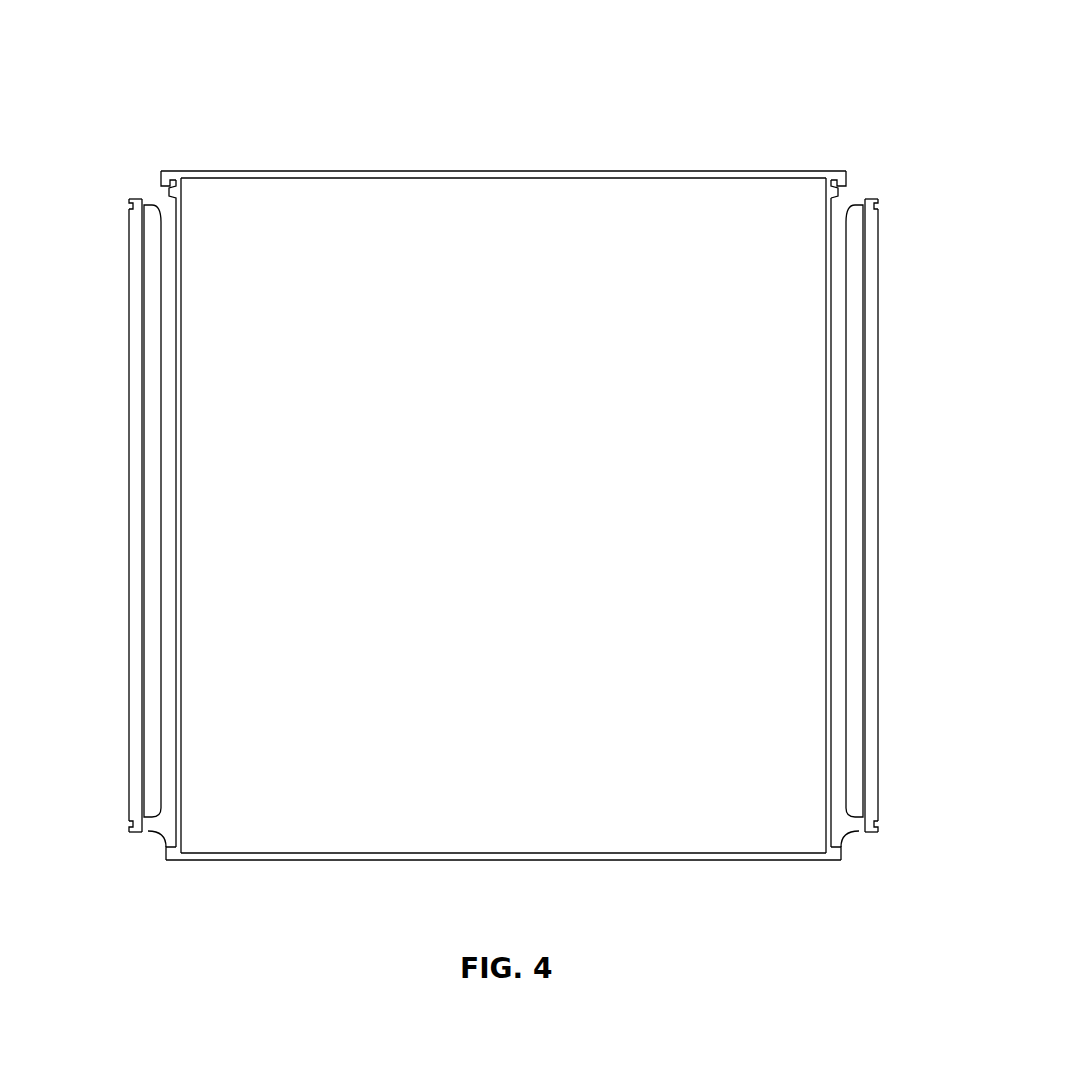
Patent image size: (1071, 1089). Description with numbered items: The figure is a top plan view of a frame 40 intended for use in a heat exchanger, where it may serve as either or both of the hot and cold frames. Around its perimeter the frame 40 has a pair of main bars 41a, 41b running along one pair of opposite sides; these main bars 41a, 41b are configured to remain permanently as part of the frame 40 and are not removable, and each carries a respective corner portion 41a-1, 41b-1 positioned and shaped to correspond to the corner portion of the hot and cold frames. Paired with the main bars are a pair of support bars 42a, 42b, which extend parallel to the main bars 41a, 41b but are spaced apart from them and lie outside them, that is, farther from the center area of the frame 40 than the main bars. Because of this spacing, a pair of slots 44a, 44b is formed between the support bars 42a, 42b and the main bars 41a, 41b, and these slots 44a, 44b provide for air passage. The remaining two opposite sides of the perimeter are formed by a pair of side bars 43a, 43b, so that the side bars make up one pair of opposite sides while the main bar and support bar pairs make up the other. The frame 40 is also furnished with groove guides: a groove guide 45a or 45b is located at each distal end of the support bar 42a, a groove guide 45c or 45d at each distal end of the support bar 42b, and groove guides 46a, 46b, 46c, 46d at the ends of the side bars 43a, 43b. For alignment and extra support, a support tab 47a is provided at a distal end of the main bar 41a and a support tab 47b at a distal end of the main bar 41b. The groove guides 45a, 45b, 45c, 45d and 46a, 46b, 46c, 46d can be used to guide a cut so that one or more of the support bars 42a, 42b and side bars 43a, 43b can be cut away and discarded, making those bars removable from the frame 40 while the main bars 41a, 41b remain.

The frame 40 is at (843, 42).
The main bar 41a is at (165, 466).
The main bar 41b is at (832, 406).
The corner portion 41a-1 is at (166, 843).
The corner portion 41b-1 is at (858, 848).
The support bar 42a is at (128, 315).
The support bar 42b is at (878, 456).
The side bar 43a is at (550, 858).
The side bar 43b is at (722, 172).
The slot 44a is at (150, 688).
The slot 44b is at (857, 662).
The groove guide 45a is at (131, 824).
The groove guide 45b is at (149, 834).
The groove guide 45c is at (878, 826).
The groove guide 45d is at (869, 840).
The groove guide 46a is at (830, 862).
The groove guide 46b is at (846, 866).
The groove guide 46c is at (837, 176).
The groove guide 46d is at (846, 185).
The support tab 47a is at (160, 228).
The support tab 47b is at (856, 220).